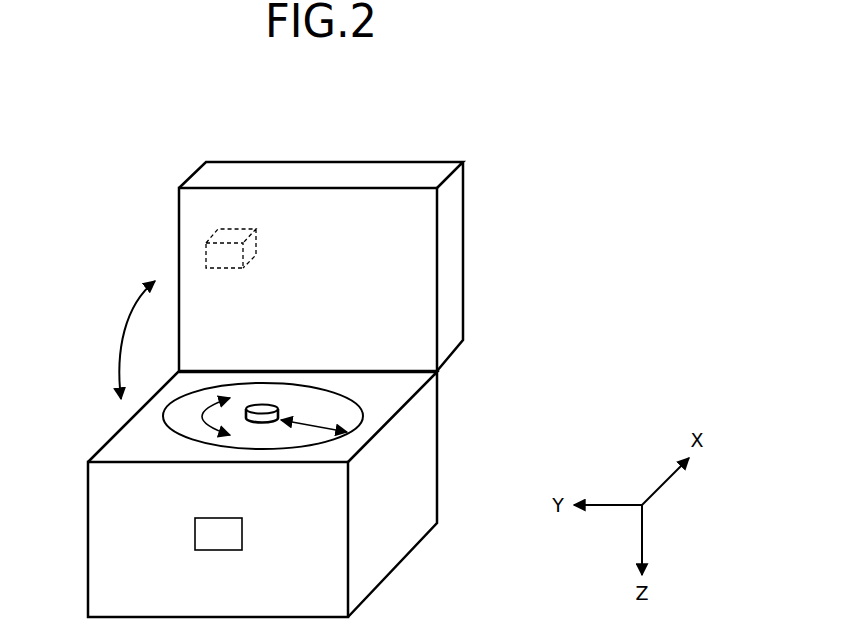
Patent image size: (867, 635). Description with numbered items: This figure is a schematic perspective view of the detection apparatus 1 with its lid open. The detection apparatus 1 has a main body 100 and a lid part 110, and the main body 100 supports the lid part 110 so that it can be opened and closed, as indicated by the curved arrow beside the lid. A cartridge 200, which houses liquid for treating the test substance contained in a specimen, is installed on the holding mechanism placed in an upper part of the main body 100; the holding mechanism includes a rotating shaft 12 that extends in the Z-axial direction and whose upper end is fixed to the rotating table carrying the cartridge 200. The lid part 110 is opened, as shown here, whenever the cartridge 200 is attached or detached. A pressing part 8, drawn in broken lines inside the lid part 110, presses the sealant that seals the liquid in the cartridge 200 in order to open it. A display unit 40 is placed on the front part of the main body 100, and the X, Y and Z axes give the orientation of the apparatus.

The detection apparatus 1 is at (458, 130).
The pressing part 8 is at (256, 243).
The rotating shaft 12 is at (263, 407).
The display unit 40 is at (242, 533).
The main body 100 is at (423, 467).
The lid part 110 is at (450, 268).
The cartridge 200 is at (332, 405).